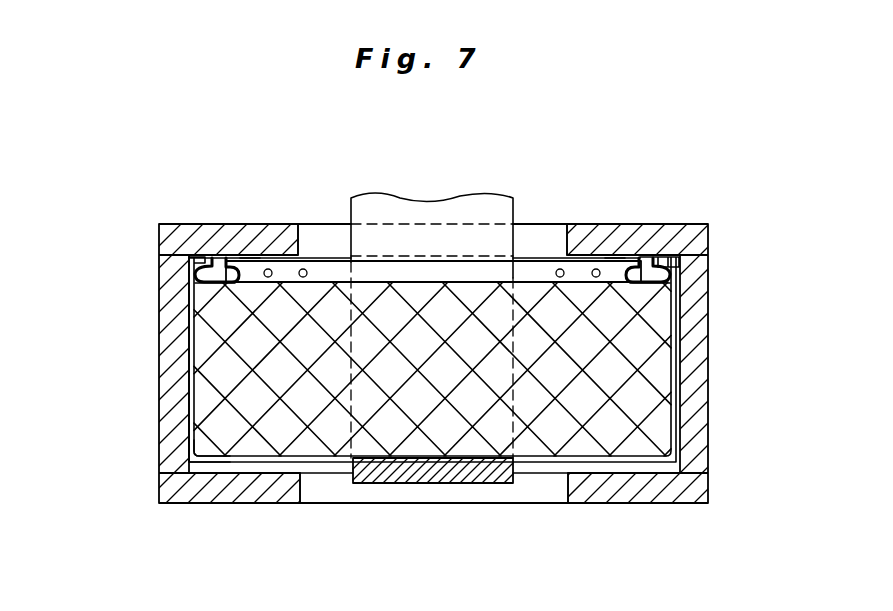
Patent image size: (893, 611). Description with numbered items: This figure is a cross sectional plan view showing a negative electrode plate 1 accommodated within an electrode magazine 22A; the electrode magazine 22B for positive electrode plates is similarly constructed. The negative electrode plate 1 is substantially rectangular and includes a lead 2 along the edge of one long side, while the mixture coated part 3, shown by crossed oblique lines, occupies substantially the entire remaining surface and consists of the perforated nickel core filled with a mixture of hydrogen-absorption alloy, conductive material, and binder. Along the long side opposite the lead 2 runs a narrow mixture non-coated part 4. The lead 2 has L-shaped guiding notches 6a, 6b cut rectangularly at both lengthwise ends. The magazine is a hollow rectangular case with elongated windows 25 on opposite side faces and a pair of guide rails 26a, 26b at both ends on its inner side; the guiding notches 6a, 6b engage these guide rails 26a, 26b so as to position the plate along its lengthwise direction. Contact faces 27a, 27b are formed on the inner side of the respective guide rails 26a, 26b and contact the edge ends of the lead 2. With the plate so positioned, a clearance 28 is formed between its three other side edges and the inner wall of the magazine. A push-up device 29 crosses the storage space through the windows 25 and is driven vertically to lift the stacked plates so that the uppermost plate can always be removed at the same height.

The negative electrode plate 1 is at (195, 400).
The lead 2 is at (331, 275).
The mixture coated part 3 is at (612, 388).
The mixture non-coated part 4 is at (533, 470).
The guiding notch 6a is at (228, 298).
The guiding notch 6b is at (660, 296).
The electrode magazine 22A is at (168, 372).
The electrode magazine 22B is at (382, 363).
The elongated window 25 is at (303, 255).
The guide rail 26a is at (195, 268).
The guide rail 26b is at (660, 266).
The contact face 27a is at (240, 258).
The contact face 27b is at (592, 258).
The clearance 28 is at (230, 475).
The push-up device 29 is at (450, 470).